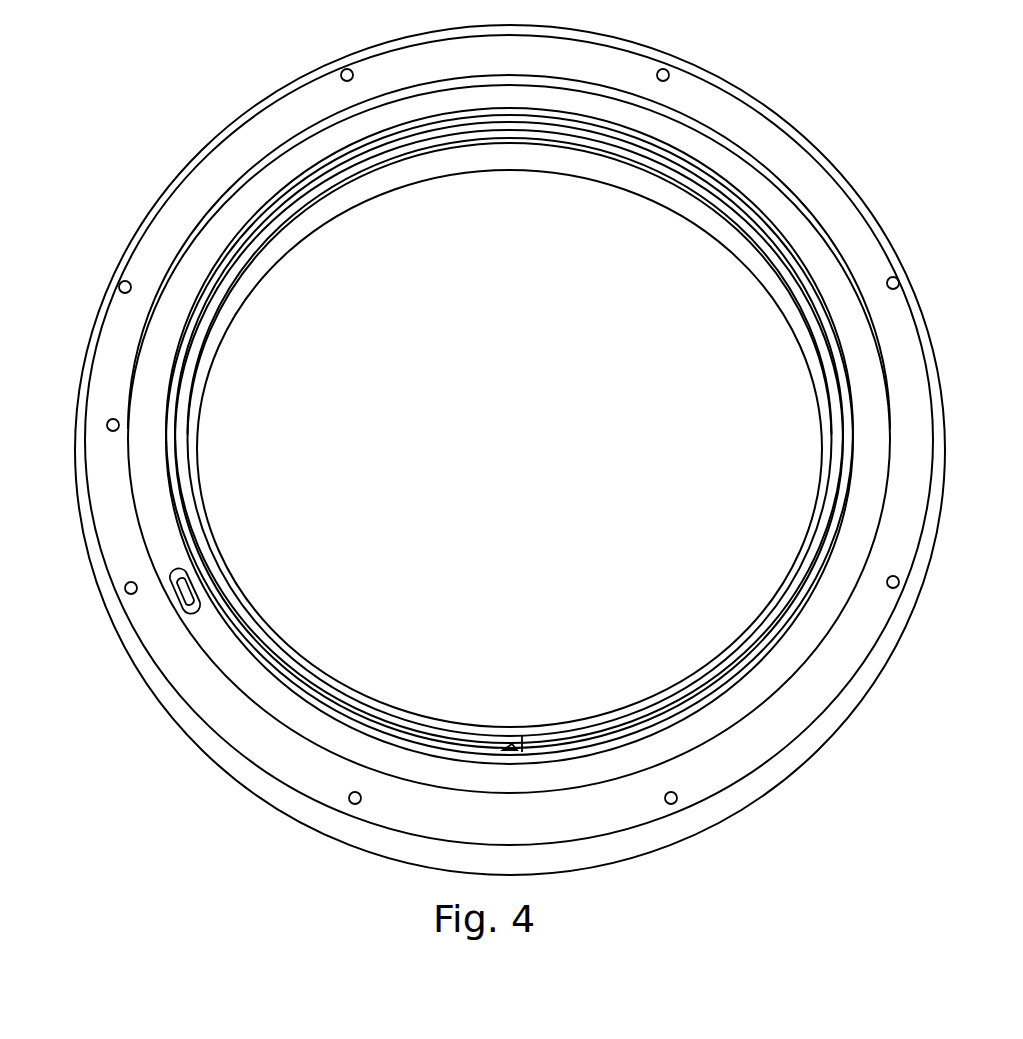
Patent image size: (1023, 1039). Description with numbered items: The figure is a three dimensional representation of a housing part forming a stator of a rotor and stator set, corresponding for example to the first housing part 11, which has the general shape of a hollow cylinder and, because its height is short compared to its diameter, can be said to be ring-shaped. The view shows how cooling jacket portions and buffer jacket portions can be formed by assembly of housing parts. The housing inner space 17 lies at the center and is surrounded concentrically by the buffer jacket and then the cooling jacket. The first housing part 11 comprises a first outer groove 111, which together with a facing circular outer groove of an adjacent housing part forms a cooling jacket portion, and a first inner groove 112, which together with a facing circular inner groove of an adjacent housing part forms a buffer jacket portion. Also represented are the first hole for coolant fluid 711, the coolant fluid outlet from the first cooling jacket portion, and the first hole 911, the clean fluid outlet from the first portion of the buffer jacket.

The first housing part 11 is at (935, 375).
The first outer groove 111 is at (227, 223).
The first inner groove 112 is at (190, 353).
The housing inner space 17 is at (506, 442).
The first hole for coolant fluid 711 is at (182, 590).
The first hole 911 is at (518, 738).